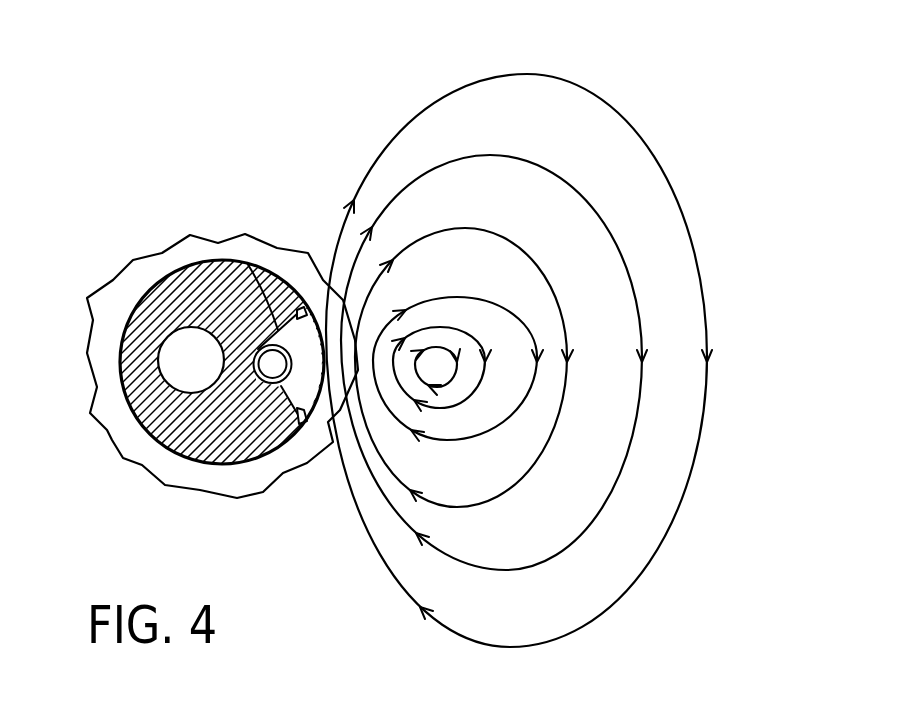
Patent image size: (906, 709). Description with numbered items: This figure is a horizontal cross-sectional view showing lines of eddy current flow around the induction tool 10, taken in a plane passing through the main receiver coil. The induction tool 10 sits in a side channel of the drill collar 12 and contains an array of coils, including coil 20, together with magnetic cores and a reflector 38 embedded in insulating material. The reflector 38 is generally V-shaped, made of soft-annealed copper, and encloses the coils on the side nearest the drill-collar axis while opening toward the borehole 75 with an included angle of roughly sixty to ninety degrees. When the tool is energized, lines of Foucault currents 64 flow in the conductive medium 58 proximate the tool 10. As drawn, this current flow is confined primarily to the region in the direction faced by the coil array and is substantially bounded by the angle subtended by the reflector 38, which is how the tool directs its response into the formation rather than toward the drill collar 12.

The induction tool 10 is at (262, 308).
The drill collar 12 is at (182, 430).
The coil 20 is at (287, 385).
The reflector 38 is at (247, 263).
The conductive medium 58 is at (477, 280).
The lines of Foucault currents 64 is at (621, 606).
The borehole 75 is at (233, 483).